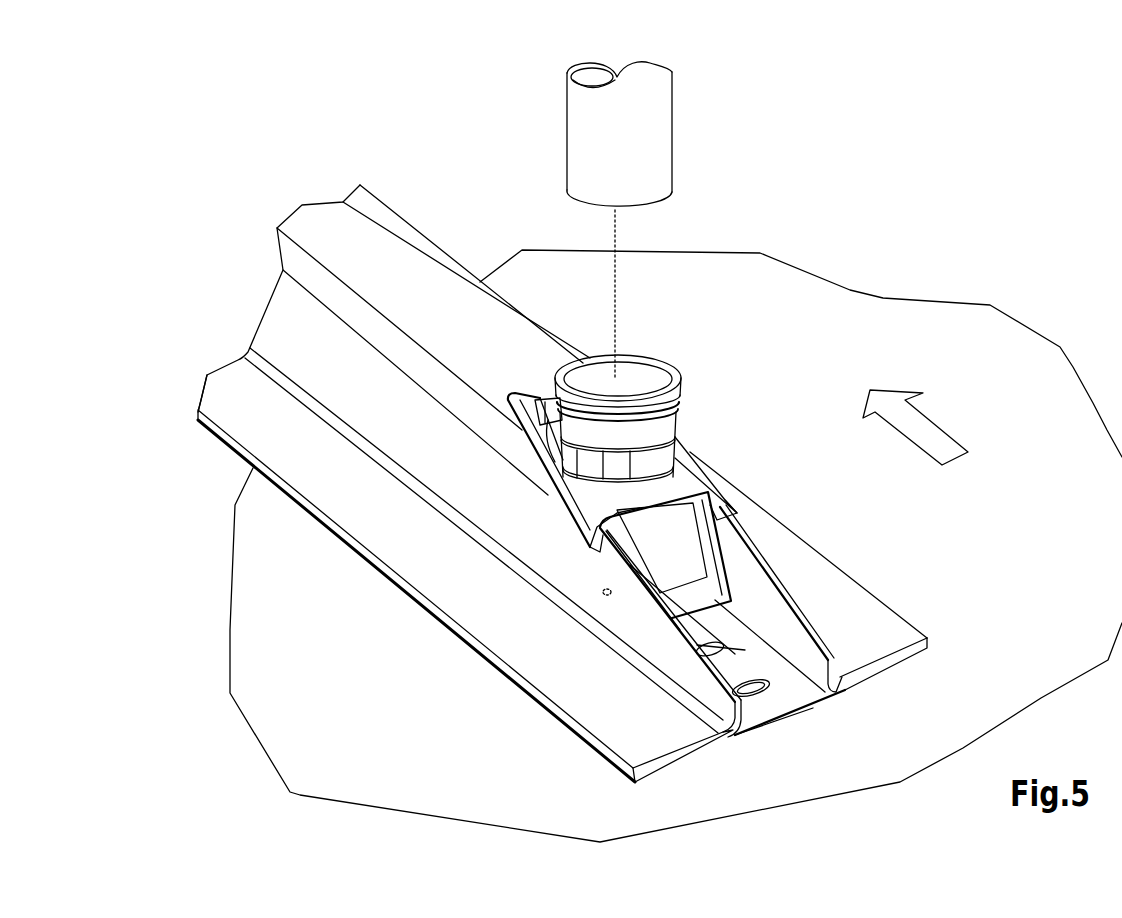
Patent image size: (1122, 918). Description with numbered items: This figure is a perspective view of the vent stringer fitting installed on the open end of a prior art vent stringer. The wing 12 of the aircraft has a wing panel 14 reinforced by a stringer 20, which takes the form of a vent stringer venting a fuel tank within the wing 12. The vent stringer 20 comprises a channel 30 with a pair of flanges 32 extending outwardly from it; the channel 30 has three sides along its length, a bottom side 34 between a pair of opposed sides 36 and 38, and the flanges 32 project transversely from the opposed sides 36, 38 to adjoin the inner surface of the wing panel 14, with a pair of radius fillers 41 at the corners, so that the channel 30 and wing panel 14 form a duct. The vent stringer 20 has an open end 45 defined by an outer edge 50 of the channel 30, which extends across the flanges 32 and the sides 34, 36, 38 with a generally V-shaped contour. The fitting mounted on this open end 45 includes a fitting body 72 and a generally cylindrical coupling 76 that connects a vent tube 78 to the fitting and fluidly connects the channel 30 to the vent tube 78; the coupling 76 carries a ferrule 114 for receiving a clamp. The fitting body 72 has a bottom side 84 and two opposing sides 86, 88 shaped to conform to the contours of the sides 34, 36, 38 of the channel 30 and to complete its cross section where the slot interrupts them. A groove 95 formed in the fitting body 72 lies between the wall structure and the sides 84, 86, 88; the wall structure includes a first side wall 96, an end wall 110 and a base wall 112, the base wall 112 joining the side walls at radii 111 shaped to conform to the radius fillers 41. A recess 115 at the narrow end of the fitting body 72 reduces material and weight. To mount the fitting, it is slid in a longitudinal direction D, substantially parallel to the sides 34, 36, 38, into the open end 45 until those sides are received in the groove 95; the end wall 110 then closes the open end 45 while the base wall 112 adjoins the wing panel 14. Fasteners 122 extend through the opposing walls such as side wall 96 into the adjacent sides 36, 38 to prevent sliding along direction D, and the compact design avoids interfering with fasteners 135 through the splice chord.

The wing 12 is at (676, 539).
The wing panel 14 is at (937, 332).
The vent stringer 20 is at (556, 488).
The channel 30 is at (190, 386).
The flanges 32 is at (632, 723).
The bottom side 34 is at (410, 280).
The opposed side 36 is at (797, 607).
The opposed side 38 is at (692, 588).
The radius fillers 41 is at (835, 690).
The open end 45 is at (825, 710).
The outer edge 50 is at (752, 698).
The fitting body 72 is at (693, 465).
The coupling 76 is at (660, 405).
The vent tube 78 is at (643, 153).
The bottom side 84 is at (524, 437).
The side 86 is at (737, 518).
The side 88 is at (587, 512).
The groove 95 is at (592, 550).
The first side wall 96 is at (713, 553).
The end wall 110 is at (700, 574).
The radii 111 is at (745, 610).
The base wall 112 is at (648, 633).
The ferrule 114 is at (690, 397).
The recess 115 is at (525, 378).
The fasteners 122 is at (608, 588).
The fasteners through the splice chord 135 is at (745, 650).
The longitudinal direction D is at (922, 433).